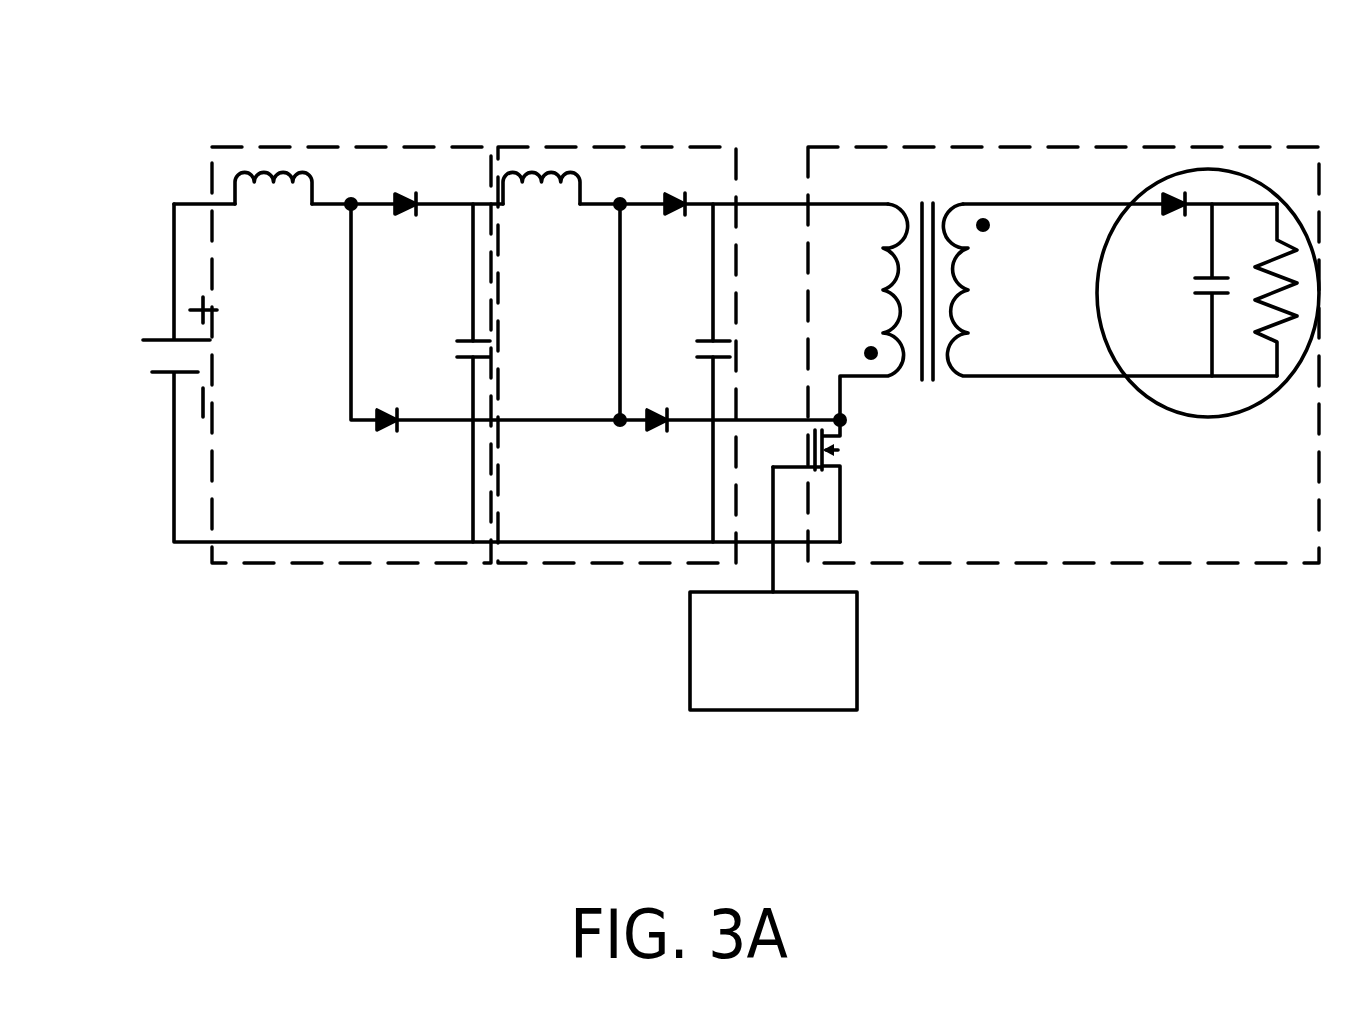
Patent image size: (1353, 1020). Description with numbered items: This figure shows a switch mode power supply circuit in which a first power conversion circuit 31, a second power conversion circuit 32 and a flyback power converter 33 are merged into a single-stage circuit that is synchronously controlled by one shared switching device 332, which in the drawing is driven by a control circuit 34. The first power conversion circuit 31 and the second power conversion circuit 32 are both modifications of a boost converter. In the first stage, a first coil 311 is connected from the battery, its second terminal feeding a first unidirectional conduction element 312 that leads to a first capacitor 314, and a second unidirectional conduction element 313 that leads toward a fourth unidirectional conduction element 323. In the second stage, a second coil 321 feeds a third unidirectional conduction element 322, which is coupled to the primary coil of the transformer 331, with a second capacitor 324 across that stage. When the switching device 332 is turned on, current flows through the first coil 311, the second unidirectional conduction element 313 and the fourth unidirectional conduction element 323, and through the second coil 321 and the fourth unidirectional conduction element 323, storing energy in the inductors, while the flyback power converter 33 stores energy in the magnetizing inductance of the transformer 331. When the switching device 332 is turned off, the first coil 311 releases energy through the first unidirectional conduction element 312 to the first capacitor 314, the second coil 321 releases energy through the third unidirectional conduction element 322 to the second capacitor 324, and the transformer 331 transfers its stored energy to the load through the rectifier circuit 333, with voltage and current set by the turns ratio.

The first power conversion circuit 31 is at (365, 147).
The second power conversion circuit 32 is at (670, 147).
The flyback power converter 33 is at (1252, 147).
The control circuit 34 is at (840, 710).
The first coil 311 is at (273, 197).
The first unidirectional conduction element 312 is at (408, 220).
The second unidirectional conduction element 313 is at (385, 404).
The first capacitor 314 is at (445, 345).
The second coil 321 is at (541, 198).
The third unidirectional conduction element 322 is at (663, 221).
The fourth unidirectional conduction element 323 is at (653, 406).
The second capacitor 324 is at (698, 334).
The transformer 331 is at (1058, 319).
The switching device 332 is at (829, 477).
The rectifier circuit 333 is at (1220, 417).